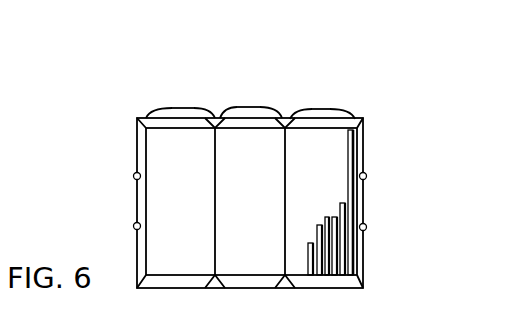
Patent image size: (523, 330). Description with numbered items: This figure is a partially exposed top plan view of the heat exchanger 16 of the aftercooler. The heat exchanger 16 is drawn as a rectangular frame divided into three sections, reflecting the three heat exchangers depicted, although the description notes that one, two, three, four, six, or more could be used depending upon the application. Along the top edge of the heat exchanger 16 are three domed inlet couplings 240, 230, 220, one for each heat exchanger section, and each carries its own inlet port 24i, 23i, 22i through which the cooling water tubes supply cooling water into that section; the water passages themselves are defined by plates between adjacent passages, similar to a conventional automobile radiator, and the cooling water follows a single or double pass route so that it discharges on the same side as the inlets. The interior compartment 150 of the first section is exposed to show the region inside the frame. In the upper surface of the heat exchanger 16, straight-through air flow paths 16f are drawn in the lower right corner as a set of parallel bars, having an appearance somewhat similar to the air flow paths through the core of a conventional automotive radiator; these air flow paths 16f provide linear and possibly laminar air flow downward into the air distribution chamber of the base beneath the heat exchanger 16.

The heat exchanger 16 is at (137, 153).
The air flow paths 16f is at (363, 202).
The compartment 150 is at (180, 152).
The cap / dome 240 is at (172, 107).
The inlet coupling 24i is at (192, 106).
The cap / dome 230 is at (243, 107).
The inlet port 23i is at (260, 107).
The cap / dome 220 is at (312, 108).
The inlet coupling 22i is at (330, 110).